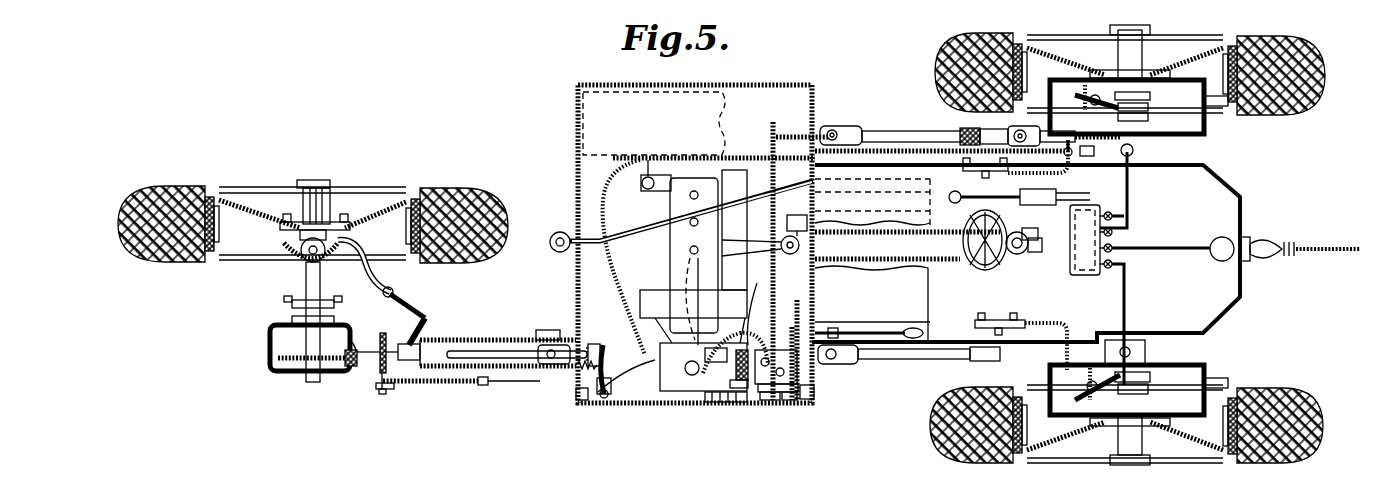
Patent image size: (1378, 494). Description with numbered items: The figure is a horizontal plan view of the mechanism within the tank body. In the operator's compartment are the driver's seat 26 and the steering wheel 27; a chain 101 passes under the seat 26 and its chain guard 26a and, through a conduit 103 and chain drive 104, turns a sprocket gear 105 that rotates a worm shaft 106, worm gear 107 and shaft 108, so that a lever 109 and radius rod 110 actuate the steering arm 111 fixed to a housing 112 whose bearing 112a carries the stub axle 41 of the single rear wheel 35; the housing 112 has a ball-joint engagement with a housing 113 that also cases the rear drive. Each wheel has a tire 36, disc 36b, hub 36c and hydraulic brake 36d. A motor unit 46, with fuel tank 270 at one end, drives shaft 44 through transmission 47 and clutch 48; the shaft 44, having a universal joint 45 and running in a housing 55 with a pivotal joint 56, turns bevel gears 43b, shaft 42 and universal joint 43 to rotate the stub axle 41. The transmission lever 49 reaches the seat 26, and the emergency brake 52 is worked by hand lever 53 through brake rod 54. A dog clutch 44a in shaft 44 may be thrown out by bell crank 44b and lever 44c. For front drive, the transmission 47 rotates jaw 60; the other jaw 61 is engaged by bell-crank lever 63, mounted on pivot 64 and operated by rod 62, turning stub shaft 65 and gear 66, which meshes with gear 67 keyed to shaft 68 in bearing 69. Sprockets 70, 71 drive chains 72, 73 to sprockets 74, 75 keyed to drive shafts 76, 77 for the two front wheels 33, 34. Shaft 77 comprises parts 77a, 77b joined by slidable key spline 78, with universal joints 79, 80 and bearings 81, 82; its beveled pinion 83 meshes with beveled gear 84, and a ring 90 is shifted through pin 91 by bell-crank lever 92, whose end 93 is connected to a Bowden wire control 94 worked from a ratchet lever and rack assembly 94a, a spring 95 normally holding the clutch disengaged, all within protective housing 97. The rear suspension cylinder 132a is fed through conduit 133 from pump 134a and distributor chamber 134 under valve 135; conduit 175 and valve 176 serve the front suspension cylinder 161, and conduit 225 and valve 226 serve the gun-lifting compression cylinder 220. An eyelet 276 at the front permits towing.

The driver's seat 26 is at (897, 301).
The chain guard 26a is at (1022, 254).
The steering wheel 27 is at (988, 270).
The front wheel 33 is at (1322, 62).
The front wheel 34 is at (1318, 412).
The rear wheel 35 is at (240, 186).
The tire 36 is at (140, 185).
The disc 36b is at (262, 205).
The hub 36c is at (345, 200).
The hydraulic brake 36d is at (410, 198).
The stub axle 41 is at (330, 200).
The shaft 42 is at (306, 314).
The universal joint 43 is at (308, 258).
The bevel gears 43b is at (300, 350).
The drive shaft 44 is at (470, 350).
The dog clutch 44a is at (592, 344).
The bell crank 44b is at (602, 398).
The lever 44c is at (822, 155).
The universal joint 45 is at (540, 345).
The motor unit 46 is at (690, 240).
The transmission 47 is at (665, 385).
The clutch 48 is at (655, 305).
The transmission lever 49 is at (848, 330).
The transmission emergency brake 52 is at (712, 404).
The hand lever 53 is at (1038, 231).
The transmission brake rod 54 is at (742, 382).
The housing 55 is at (460, 338).
The pivotal joint 56 is at (548, 330).
The dog clutch jaw 60 is at (728, 335).
The dog clutch jaw 61 is at (712, 262).
The rod 62 is at (852, 332).
The bell-crank lever 63 is at (715, 365).
The pivot 64 is at (740, 390).
The stub shaft 65 is at (688, 364).
The gear 66 is at (757, 280).
The gear 67 is at (787, 394).
The shaft 68 is at (772, 386).
The bearing 69 is at (798, 400).
The sprocket 70 is at (782, 396).
The sprocket 71 is at (797, 390).
The chain 72 is at (814, 393).
The chain 73 is at (772, 160).
The sprocket 74 is at (792, 335).
The sprocket 75 is at (772, 124).
The drive shaft 76 is at (838, 365).
The drive shaft 77 is at (790, 133).
The rearward shaft part 77a is at (892, 130).
The forward drive shaft part 77b is at (992, 145).
The key spline 78 is at (966, 128).
The universal joint 79 is at (824, 125).
The universal joint 80 is at (1008, 132).
The bearing 81 is at (788, 150).
The bearing 82 is at (1068, 156).
The beveled pinion 83 is at (1088, 156).
The beveled gear 84 is at (1168, 136).
The ring 90 is at (1148, 107).
The pin 91 is at (1150, 96).
The bell-crank lever 92 is at (1148, 117).
The lever end 93 is at (1080, 95).
The Bowden wire control 94 is at (1048, 172).
The ratchet lever and rack assembly 94a is at (985, 318).
The spring 95 is at (1086, 82).
The protective housing 97 is at (1220, 118).
The chain 101 is at (878, 240).
The conduit 103 is at (578, 400).
The chain drive 104 is at (435, 385).
The sprocket gear 105 is at (384, 394).
The worm shaft 106 is at (378, 386).
The worm gear 107 is at (383, 334).
The shaft 108 is at (410, 360).
The lever 109 is at (422, 320).
The radius rod 110 is at (392, 290).
The steering arm 111 is at (362, 258).
The housing 112 is at (300, 236).
The bearing 112a is at (290, 230).
The housing 113 is at (290, 255).
The cylinder 132a is at (558, 233).
The conduit 133 is at (650, 225).
The distributor chamber 134 is at (1112, 216).
The pump 134a is at (890, 210).
The valve 135 is at (1100, 212).
The cylinder 161 is at (1132, 156).
The conduit 175 is at (1128, 228).
The valve 176 is at (1112, 234).
The compression cylinder 220 is at (1238, 235).
The conduit 225 is at (1188, 252).
The valve 226 is at (1130, 252).
The fuel tank 270 is at (671, 134).
The eyelet 276 is at (1262, 242).